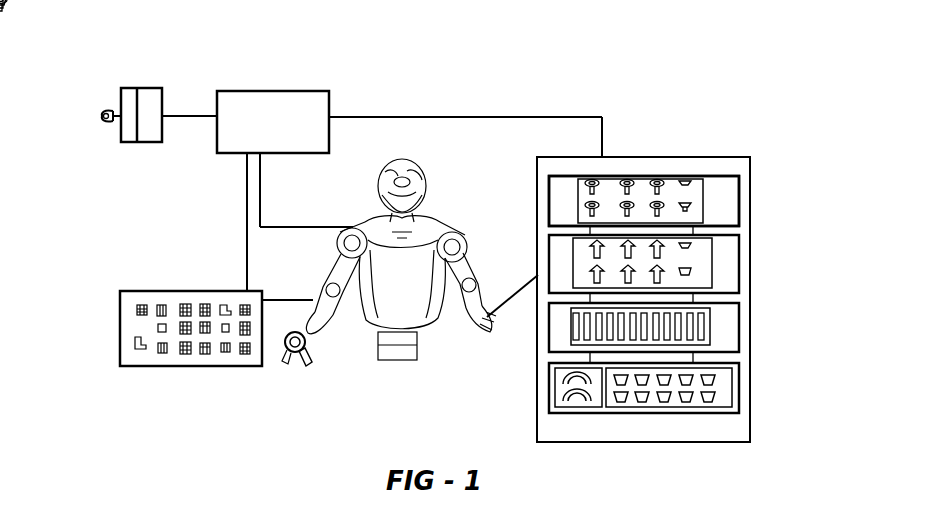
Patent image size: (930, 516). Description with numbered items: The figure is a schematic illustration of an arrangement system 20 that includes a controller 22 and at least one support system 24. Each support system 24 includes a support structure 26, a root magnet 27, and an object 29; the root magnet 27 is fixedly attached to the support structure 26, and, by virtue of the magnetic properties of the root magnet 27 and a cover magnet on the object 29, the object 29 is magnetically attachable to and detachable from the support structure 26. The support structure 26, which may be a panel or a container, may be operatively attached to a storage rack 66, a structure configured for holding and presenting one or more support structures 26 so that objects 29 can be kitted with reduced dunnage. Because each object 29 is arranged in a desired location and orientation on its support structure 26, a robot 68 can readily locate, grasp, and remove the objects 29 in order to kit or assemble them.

The arrangement system 20 is at (148, 80).
The controller 22 is at (273, 122).
The support system 24 is at (95, 80).
The support structure 26 is at (143, 300).
The root magnet 27 is at (137, 312).
The object 29 is at (590, 185).
The storage rack 66 is at (722, 195).
The robot 68 is at (418, 177).